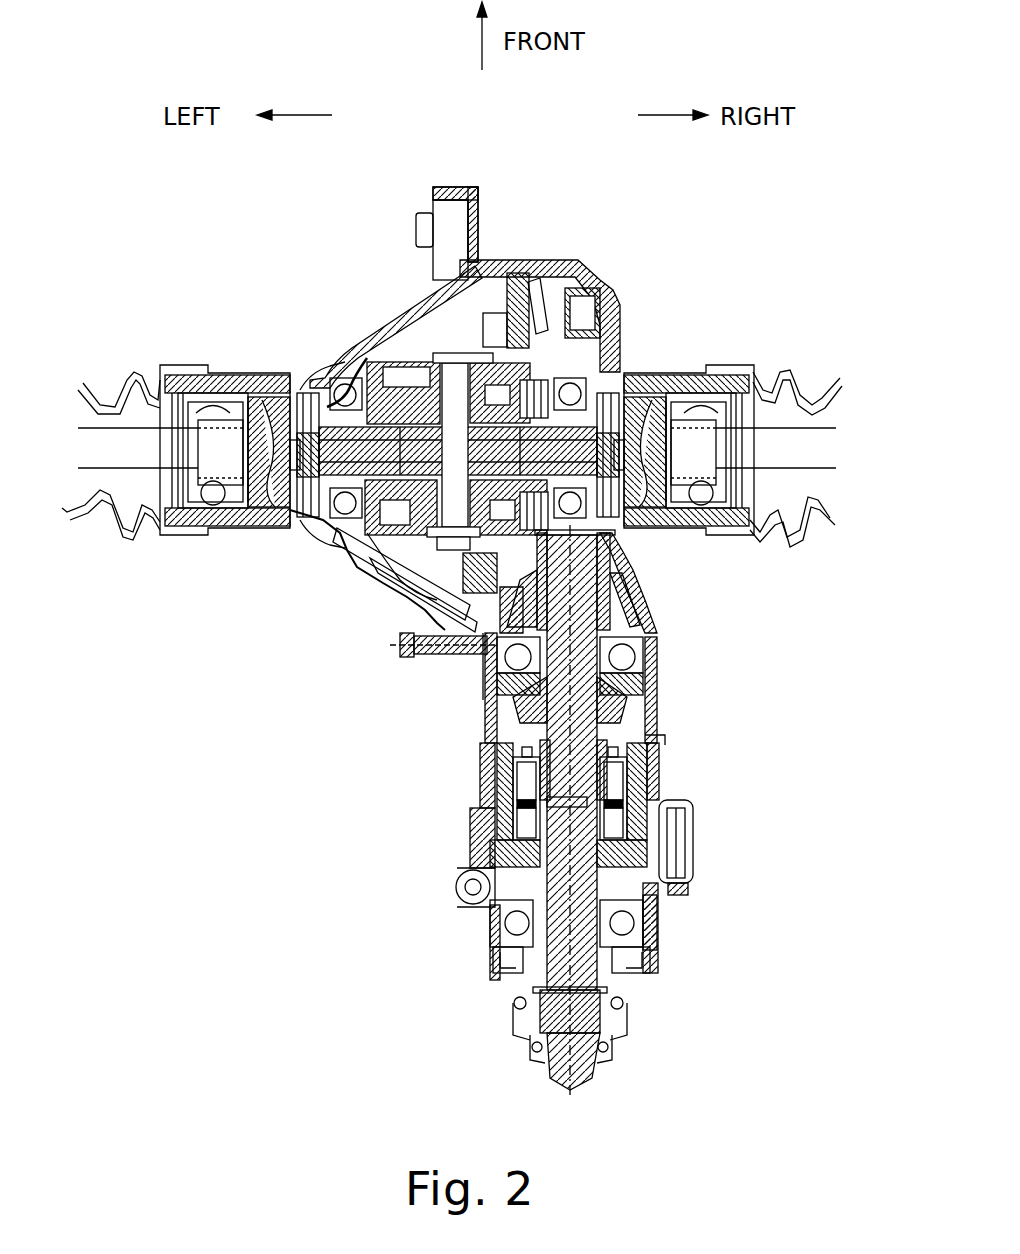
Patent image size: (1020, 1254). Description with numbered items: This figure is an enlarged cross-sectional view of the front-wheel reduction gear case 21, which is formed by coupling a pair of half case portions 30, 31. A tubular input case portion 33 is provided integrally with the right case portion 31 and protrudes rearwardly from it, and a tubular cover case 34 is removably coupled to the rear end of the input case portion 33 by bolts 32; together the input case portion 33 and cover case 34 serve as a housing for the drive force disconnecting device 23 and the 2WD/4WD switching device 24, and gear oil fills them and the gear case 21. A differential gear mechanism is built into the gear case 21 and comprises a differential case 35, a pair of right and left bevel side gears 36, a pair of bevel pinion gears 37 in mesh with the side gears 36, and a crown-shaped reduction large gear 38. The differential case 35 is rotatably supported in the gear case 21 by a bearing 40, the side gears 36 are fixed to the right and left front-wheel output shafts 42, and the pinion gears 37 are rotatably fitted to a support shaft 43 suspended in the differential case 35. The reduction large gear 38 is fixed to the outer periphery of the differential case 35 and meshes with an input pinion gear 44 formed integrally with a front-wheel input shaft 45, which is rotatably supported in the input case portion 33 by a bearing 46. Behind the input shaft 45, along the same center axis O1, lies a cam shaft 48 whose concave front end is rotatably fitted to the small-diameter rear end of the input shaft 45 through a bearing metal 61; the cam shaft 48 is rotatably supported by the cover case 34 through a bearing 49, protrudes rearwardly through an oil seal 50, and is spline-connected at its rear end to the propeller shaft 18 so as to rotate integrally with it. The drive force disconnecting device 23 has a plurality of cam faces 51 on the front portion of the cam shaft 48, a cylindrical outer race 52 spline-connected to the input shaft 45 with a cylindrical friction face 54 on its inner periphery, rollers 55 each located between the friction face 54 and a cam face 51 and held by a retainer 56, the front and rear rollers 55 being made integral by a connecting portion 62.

The propeller shaft 18 is at (528, 1048).
The front-wheel reduction gear case 21 is at (322, 286).
The drive force disconnecting device 23 is at (490, 805).
The 2WD/4WD switching device 24 is at (470, 875).
The left case portion 30 is at (350, 372).
The right case portion 31 is at (555, 268).
The bolts 32 is at (675, 910).
The input case portion 33 is at (478, 698).
The cover case 34 is at (650, 955).
The differential case 35 is at (330, 540).
The bevel side gears 36 is at (605, 300).
The bevel pinion gears 37 is at (393, 365).
The reduction large gear 38 is at (520, 285).
The bearing 40 is at (318, 395).
The front-wheel output shafts 42 is at (285, 508).
The support shaft 43 is at (448, 375).
The input pinion gear 44 is at (630, 610).
The front-wheel input shaft 45 is at (620, 672).
The bearing 46 is at (640, 655).
The cam shaft 48 is at (548, 988).
The bearing 49 is at (495, 928).
The oil seal 50 is at (640, 985).
The cam faces 51 is at (556, 838).
The outer race 52 is at (655, 758).
The cylindrical friction face 54 is at (490, 770).
The rollers 55 is at (522, 828).
The retainer 56 is at (668, 875).
The bearing metal 61 is at (660, 740).
The connecting portion 62 is at (670, 835).
The center axis O1 is at (605, 1050).